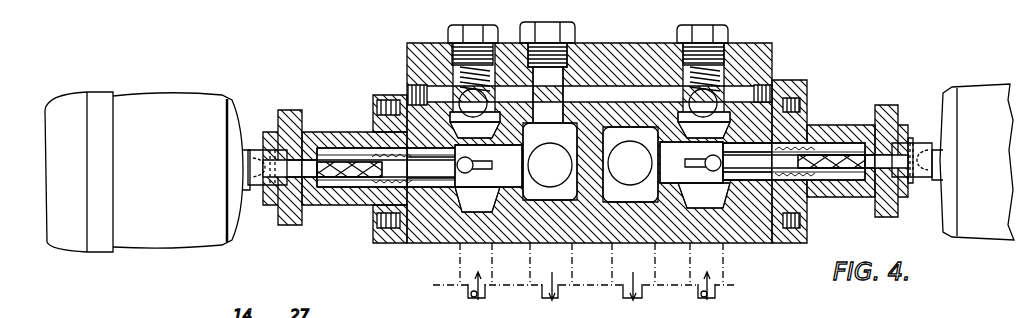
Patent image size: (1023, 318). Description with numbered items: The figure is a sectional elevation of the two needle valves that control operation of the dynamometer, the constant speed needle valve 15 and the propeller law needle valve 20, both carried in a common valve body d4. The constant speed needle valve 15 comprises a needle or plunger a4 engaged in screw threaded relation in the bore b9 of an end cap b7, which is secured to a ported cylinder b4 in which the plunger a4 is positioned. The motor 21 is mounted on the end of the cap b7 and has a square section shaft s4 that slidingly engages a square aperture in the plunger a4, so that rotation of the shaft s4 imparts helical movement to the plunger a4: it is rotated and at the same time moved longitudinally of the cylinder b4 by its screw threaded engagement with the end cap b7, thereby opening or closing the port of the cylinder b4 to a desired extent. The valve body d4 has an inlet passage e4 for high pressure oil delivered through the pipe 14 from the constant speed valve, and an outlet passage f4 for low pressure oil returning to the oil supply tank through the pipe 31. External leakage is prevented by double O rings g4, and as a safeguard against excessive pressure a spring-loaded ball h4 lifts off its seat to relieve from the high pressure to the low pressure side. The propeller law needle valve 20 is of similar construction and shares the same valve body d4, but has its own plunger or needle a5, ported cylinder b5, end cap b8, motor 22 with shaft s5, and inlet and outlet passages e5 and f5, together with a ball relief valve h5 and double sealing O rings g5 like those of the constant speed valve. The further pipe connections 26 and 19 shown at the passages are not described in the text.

The motor 21 is at (157, 105).
The motor 22 is at (966, 100).
The constant speed needle valve 15 is at (399, 41).
The propeller law needle valve 20 is at (780, 40).
The pipe 31 is at (562, 290).
The valve body d4 is at (600, 65).
The spring-loaded ball h4 is at (462, 100).
The ball relief valve h5 is at (708, 93).
The double O rings g4 is at (308, 153).
The double sealing O rings g5 is at (883, 145).
The end cap b7 is at (327, 192).
The end cap b8 is at (855, 192).
The bore b9 is at (370, 150).
The ported cylinder b4 is at (425, 197).
The ported cylinder b5 is at (766, 235).
The square section shaft s4 is at (352, 172).
The shaft s5 is at (832, 157).
The needle or plunger a4 is at (378, 180).
The plunger or needle a5 is at (792, 175).
The inlet passage e4 is at (489, 269).
The outlet passage f4 is at (569, 269).
The outlet passage f5 is at (649, 269).
The inlet passage e5 is at (719, 269).
The pipe 14 is at (470, 290).
The pipe 26 is at (644, 290).
The pipe 19 is at (716, 290).